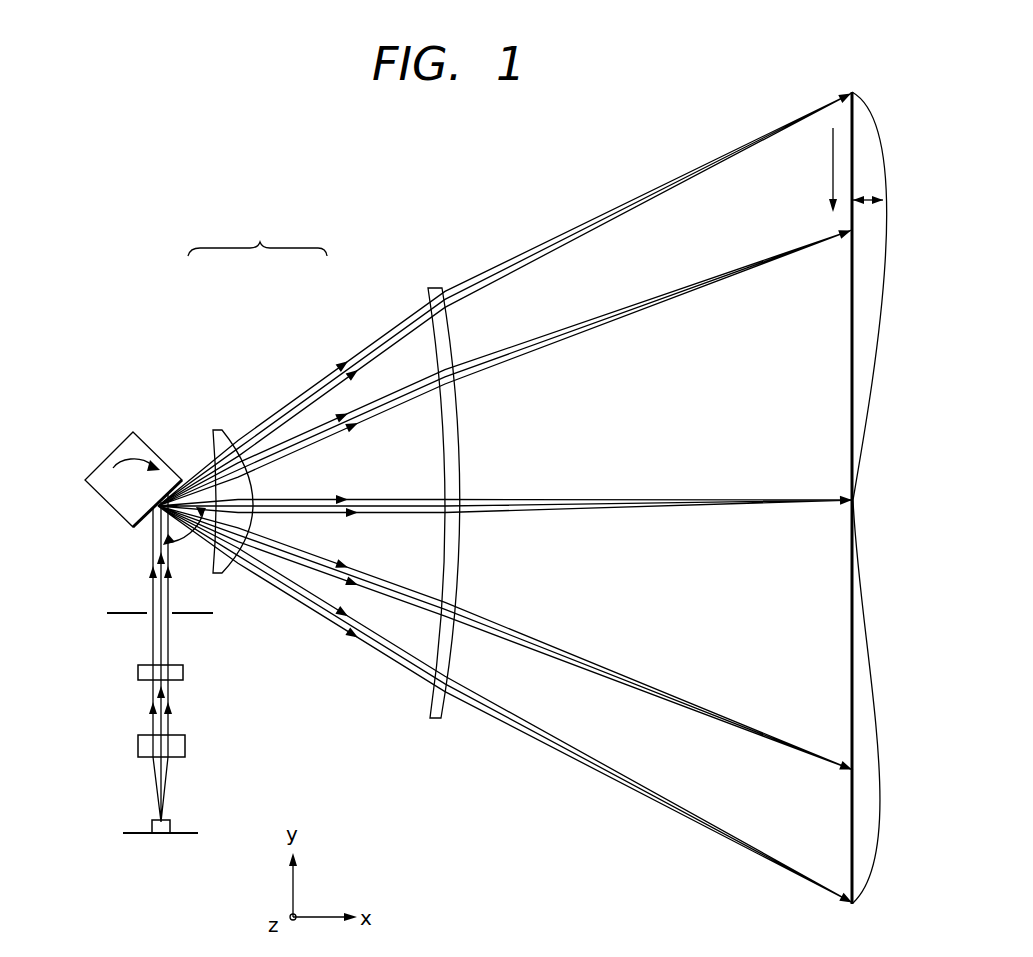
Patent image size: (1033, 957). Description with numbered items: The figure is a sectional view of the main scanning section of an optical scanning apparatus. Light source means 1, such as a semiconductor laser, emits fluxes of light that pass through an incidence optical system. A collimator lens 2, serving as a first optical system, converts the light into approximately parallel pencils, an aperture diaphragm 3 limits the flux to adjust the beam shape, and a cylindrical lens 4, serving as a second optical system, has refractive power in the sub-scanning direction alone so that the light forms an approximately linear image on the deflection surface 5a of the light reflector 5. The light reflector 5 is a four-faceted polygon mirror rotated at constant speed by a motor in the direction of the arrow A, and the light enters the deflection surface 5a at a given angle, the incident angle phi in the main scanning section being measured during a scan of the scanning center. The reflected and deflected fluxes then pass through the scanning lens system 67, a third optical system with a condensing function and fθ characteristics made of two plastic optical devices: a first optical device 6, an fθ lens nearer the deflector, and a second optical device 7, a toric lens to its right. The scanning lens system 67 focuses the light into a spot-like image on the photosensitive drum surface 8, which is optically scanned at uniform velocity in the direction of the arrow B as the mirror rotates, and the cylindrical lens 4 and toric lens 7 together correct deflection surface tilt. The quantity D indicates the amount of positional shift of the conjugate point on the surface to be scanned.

The light source means 1 is at (152, 828).
The collimator lens 2 is at (138, 746).
The aperture diaphragm 3 is at (107, 612).
The cylindrical lens 4 is at (138, 672).
The light reflector 5 is at (116, 446).
The deflection surface 5a is at (139, 529).
The first optical device 6 is at (220, 428).
The second optical device 7 is at (428, 288).
The scanning lens system 67 is at (257, 233).
The photosensitive drum surface 8 is at (852, 104).
The rotation direction arrow A is at (140, 458).
The scanning direction arrow B is at (830, 153).
The amount of positional shift of the conjugate point D is at (866, 205).
The incident angle in the main scanning section phi is at (178, 540).